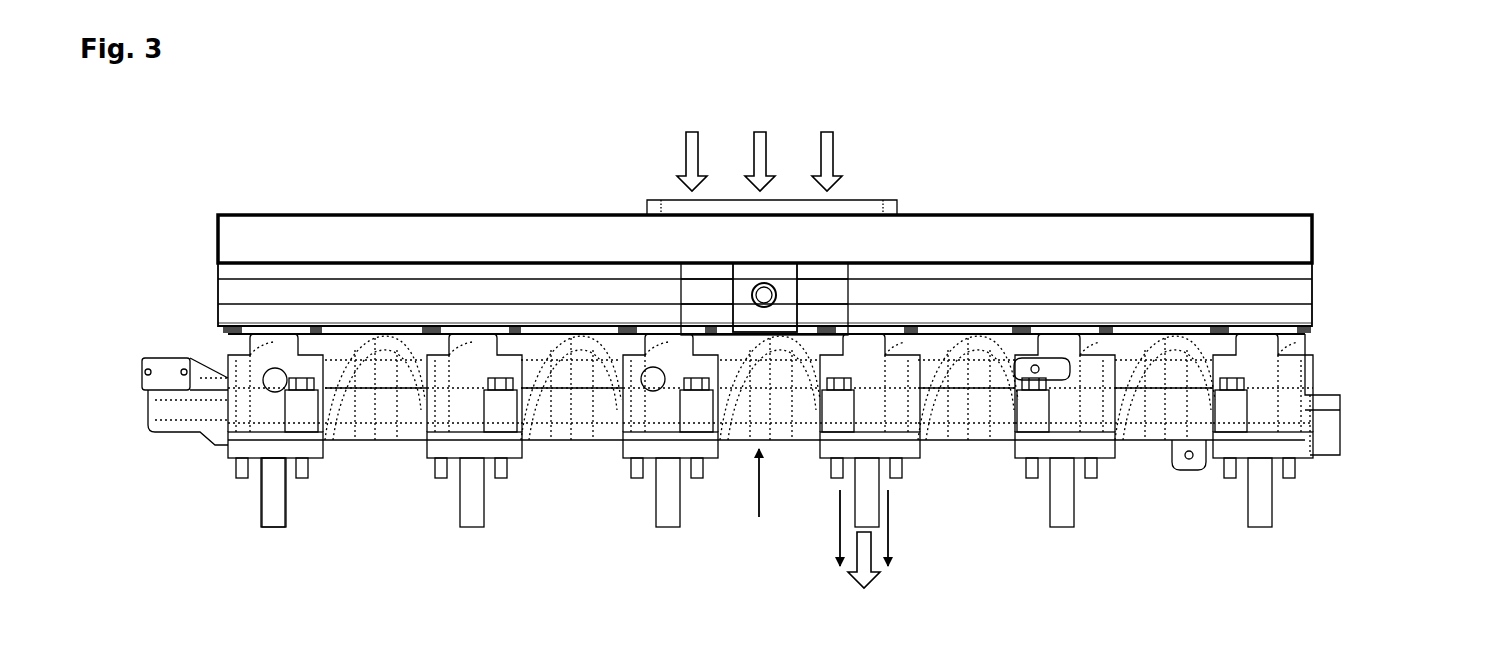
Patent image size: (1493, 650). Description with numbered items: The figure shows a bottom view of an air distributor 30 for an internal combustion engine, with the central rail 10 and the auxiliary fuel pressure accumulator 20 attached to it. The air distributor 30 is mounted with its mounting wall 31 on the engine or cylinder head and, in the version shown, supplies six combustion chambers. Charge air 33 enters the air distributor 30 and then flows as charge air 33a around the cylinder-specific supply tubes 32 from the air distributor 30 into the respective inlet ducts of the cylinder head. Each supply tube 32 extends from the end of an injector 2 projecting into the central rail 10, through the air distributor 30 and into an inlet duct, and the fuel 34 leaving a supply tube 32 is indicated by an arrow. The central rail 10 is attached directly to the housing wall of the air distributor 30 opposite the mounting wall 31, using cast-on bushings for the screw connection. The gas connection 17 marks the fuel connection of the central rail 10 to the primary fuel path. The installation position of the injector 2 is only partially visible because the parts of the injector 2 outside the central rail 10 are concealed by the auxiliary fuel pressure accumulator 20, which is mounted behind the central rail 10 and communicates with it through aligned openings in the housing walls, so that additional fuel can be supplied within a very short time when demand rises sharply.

The injector 2 is at (275, 204).
The central rail 10 is at (1342, 295).
The gas connection 17 is at (795, 272).
The auxiliary fuel pressure accumulator 20 is at (753, 250).
The air distributor 30 is at (1342, 370).
The mounting wall of the air distributor 31 is at (759, 499).
The supply tube 32 is at (272, 502).
The charge air before entering the air collector 33 is at (759, 146).
The charge air flowing into the cylinder head 33a is at (865, 528).
The fuel 34 is at (864, 574).